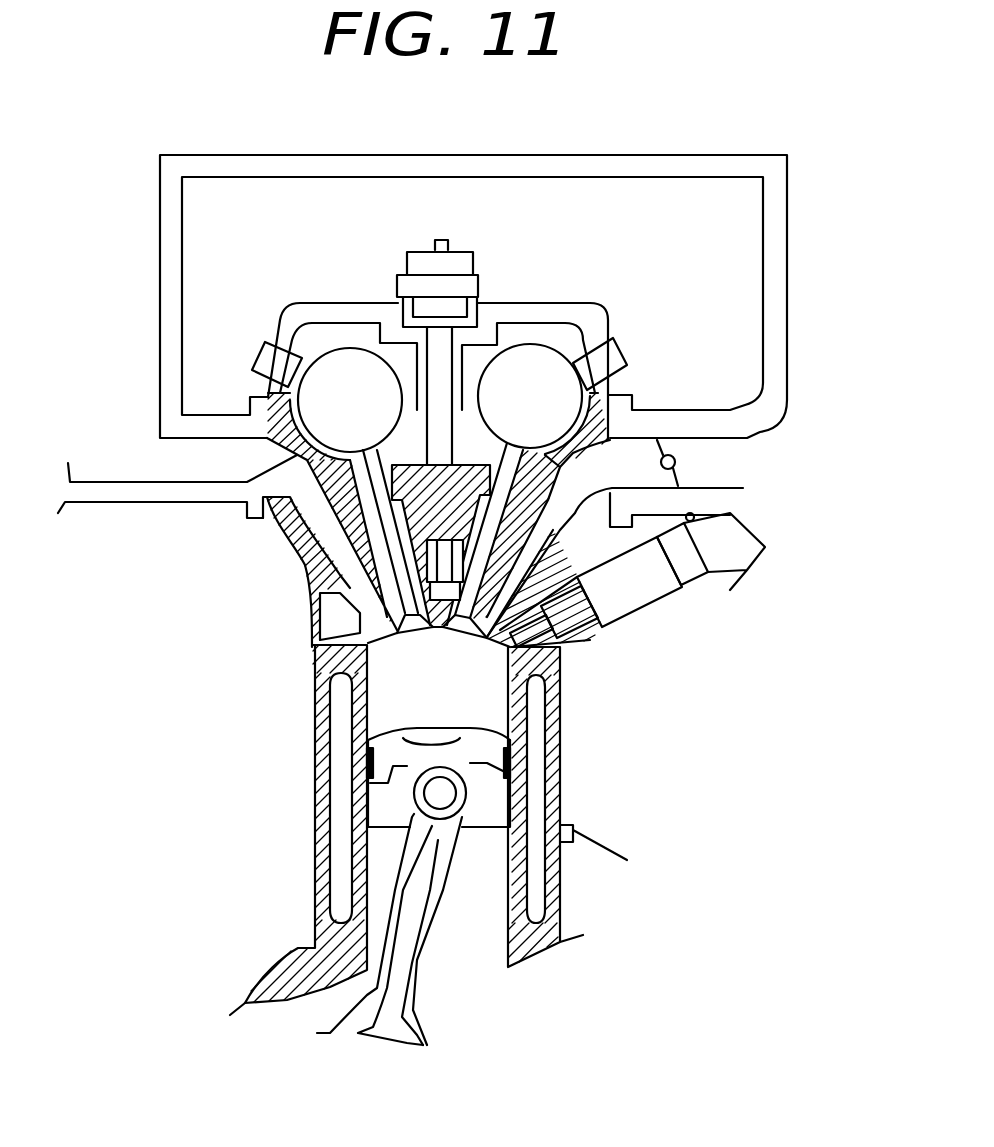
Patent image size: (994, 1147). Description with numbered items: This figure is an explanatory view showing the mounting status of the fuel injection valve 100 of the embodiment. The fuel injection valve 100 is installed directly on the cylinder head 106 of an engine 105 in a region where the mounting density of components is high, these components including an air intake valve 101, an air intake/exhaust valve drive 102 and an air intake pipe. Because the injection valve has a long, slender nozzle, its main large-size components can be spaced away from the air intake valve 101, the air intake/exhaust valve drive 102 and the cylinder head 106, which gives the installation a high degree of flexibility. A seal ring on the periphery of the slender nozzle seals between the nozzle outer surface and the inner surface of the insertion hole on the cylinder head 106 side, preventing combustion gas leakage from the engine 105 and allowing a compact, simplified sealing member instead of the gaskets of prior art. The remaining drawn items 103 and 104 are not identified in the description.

The fuel injection valve 100 is at (608, 603).
The air intake valve 101 is at (500, 460).
The air intake/exhaust valve drive 102 is at (542, 337).
The connector of fuel injection valve 103 is at (553, 530).
The exhaust valve 104 is at (563, 637).
The engine 105 is at (322, 790).
The cylinder head 106 is at (298, 553).